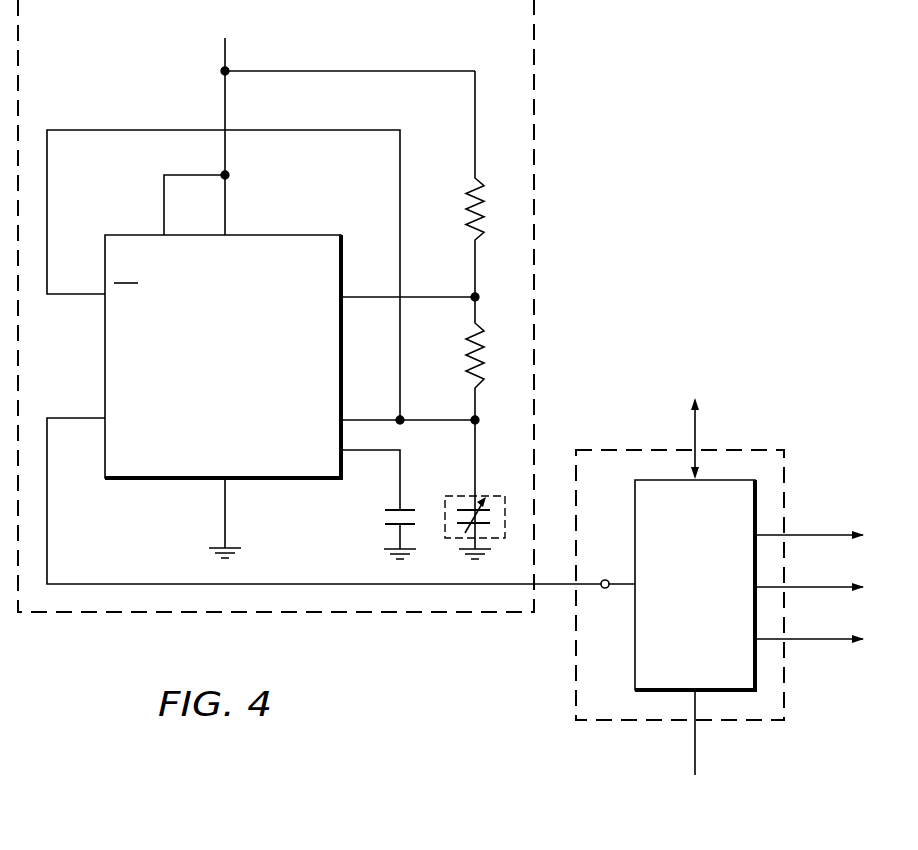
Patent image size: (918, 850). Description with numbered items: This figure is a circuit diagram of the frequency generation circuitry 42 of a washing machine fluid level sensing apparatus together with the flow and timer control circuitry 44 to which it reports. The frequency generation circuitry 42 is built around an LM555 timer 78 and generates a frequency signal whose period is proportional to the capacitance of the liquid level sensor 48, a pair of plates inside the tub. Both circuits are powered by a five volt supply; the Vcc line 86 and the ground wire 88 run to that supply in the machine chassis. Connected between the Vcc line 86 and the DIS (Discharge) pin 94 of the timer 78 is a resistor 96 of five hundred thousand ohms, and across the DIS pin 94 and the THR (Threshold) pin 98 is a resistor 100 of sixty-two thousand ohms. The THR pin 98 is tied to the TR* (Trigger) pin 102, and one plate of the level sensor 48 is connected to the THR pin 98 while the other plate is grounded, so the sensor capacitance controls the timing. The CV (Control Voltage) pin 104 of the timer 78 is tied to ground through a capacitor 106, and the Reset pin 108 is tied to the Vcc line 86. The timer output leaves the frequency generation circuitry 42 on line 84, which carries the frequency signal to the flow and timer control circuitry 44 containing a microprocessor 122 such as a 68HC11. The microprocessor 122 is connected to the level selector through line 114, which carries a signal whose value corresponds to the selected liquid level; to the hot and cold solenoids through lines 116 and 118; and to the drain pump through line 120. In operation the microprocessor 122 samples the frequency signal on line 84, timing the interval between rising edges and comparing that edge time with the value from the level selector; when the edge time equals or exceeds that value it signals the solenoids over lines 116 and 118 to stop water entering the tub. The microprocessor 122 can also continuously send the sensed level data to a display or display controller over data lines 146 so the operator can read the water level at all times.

The frequency generation circuitry 42 is at (355, 614).
The LM555 timer 78 is at (124, 480).
The Vcc line 86 is at (225, 56).
The Reset pin 108 is at (164, 188).
The TR* (Trigger) pin 102 is at (68, 292).
The DIS (Discharge) pin 94 is at (365, 295).
The resistor 96 is at (480, 216).
The resistor 100 is at (500, 360).
The THR (Threshold) pin 98 is at (365, 418).
The CV (Control Voltage) pin 104 is at (372, 452).
The capacitor 106 is at (383, 513).
The level sensor 48 is at (506, 481).
The ground wire 88 is at (225, 525).
The line 84 is at (548, 582).
The flow and timer control circuitry 44 is at (611, 722).
The microprocessor 122 is at (634, 650).
The line 114 is at (696, 440).
The line 116 is at (833, 533).
The line 118 is at (833, 585).
The line 120 is at (833, 637).
The data lines 146 is at (696, 745).